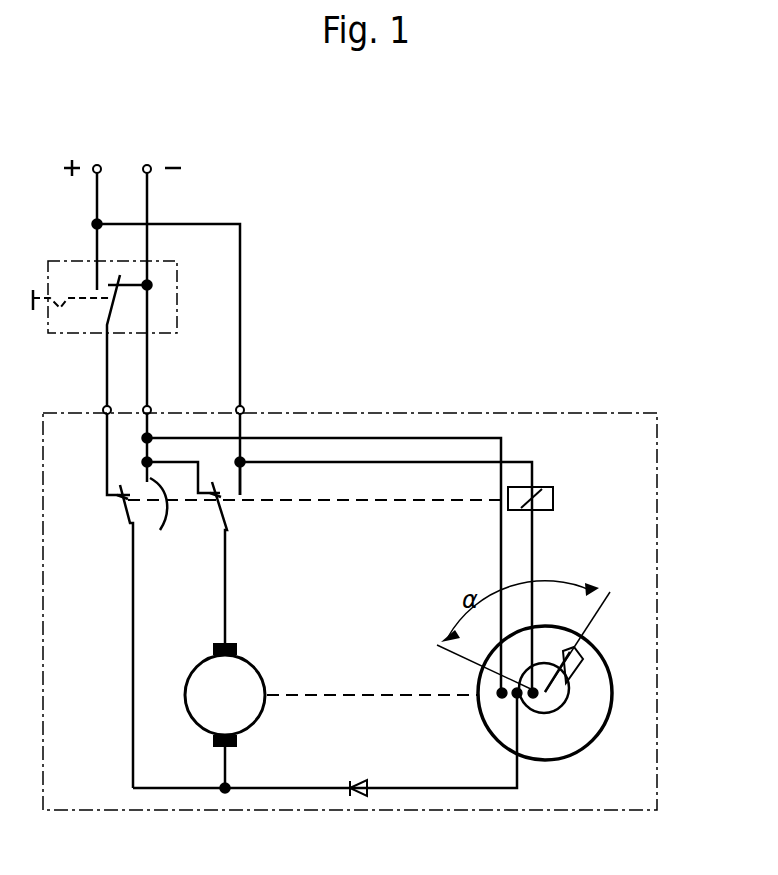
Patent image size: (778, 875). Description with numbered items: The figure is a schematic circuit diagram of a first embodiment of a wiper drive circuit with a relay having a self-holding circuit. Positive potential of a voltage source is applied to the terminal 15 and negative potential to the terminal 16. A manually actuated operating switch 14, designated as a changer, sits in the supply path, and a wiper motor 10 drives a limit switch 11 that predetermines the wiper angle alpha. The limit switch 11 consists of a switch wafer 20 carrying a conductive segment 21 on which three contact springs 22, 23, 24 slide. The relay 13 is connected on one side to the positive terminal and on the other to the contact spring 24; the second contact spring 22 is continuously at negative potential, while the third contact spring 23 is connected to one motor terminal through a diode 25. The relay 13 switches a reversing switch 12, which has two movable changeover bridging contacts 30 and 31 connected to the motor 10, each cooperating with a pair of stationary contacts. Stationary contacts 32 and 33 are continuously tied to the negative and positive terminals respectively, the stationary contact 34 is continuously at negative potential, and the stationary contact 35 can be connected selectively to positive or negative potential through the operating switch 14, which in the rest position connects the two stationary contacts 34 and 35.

The wiper motor 10 is at (257, 667).
The limit switch 11 is at (624, 677).
The reversing switch 12 is at (250, 489).
The relay 13 is at (555, 497).
The operating switch 14 is at (90, 323).
The terminal 15 is at (97, 165).
The terminal 16 is at (147, 165).
The switch wafer 20 is at (568, 740).
The conductive segment 21 is at (556, 698).
The contact spring 22 is at (497, 697).
The contact spring 23 is at (513, 698).
The contact spring 24 is at (535, 698).
The diode 25 is at (357, 798).
The changeover bridging contact 30 is at (128, 522).
The changeover bridging contact 31 is at (212, 522).
The stationary contact 32 is at (183, 460).
The stationary contact 33 is at (243, 472).
The stationary contact 34 is at (163, 519).
The stationary contact 35 is at (107, 463).